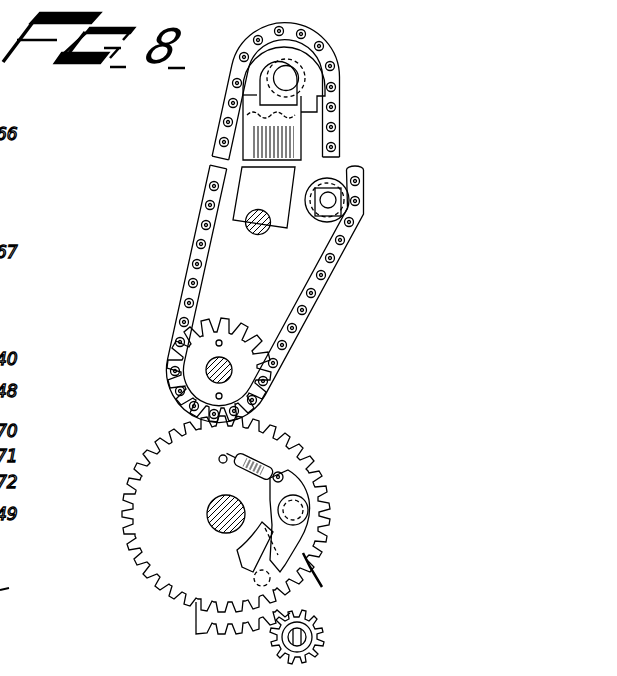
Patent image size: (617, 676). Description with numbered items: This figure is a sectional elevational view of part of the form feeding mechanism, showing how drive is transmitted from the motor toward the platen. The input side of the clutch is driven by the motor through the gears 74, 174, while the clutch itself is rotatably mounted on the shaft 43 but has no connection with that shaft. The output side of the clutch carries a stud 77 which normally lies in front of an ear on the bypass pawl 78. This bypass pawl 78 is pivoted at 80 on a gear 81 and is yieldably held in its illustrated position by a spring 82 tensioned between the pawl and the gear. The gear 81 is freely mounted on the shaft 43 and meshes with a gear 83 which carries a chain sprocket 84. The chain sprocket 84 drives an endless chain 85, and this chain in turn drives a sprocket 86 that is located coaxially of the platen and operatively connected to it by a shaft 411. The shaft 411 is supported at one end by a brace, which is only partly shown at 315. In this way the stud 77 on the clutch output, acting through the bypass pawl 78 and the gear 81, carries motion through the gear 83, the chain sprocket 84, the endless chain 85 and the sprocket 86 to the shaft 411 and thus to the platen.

The shaft 411 is at (305, 68).
The sprocket 86 is at (313, 92).
The brace 315 is at (301, 139).
The endless chain 85 is at (333, 278).
The gear 83 is at (231, 313).
The chain sprocket 84 is at (250, 369).
The shaft 43 is at (215, 514).
The spring 82 is at (263, 460).
The gear 81 is at (302, 456).
The pivot 80 is at (318, 490).
The gear 174 is at (310, 507).
The bypass pawl 78 is at (302, 532).
The stud 77 is at (320, 565).
The gear 74 is at (312, 626).